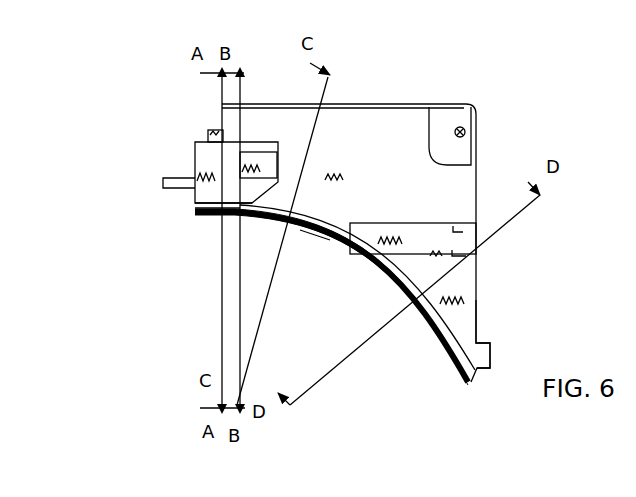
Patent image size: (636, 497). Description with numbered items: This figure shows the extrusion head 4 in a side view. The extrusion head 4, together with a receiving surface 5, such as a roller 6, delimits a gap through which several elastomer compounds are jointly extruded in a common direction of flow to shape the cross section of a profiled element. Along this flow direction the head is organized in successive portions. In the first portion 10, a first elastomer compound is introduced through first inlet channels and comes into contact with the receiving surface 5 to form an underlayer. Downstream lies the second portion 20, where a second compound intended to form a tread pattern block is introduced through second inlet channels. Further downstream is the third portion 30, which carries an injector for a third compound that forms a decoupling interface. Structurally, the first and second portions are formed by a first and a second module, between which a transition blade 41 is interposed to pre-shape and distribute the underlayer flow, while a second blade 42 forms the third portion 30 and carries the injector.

The extrusion head 4 is at (492, 88).
The transition blade 41 is at (400, 217).
The second blade 42 is at (235, 192).
The third portion of the extrusion head 30 is at (202, 232).
The second portion of the extrusion head 20 is at (297, 253).
The first portion of the extrusion head 10 is at (383, 307).
The receiving surface 5 is at (331, 341).
The roller 6 is at (450, 381).